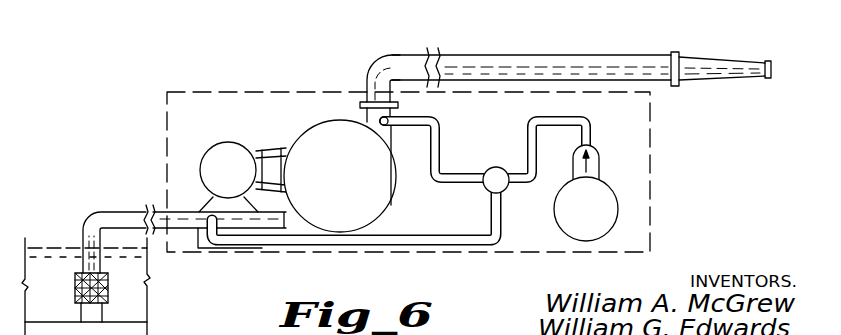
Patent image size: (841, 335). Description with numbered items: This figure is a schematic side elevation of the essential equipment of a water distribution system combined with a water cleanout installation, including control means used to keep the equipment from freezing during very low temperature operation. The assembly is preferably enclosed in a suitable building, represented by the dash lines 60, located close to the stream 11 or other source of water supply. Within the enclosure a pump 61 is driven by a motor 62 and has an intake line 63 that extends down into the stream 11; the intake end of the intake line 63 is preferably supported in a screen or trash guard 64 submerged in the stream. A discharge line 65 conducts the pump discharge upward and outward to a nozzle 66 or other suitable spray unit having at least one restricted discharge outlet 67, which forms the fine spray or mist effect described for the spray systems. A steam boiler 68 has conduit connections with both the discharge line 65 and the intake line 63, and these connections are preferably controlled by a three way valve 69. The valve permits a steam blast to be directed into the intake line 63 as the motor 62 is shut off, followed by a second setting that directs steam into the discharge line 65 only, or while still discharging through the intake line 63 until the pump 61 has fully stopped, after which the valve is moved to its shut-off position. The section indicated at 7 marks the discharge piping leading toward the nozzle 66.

The discharge pipe (section line 7-7) 7 is at (477, 67).
The stream 11 is at (50, 303).
The building 60 is at (165, 95).
The pump 61 is at (348, 186).
The motor 62 is at (229, 142).
The intake line 63 is at (105, 212).
The screen or trash guard 64 is at (105, 297).
The discharge line 65 is at (387, 61).
The nozzle 66 is at (713, 64).
The restricted discharge outlet 67 is at (771, 68).
The steam boiler 68 is at (617, 202).
The three way valve 69 is at (492, 167).